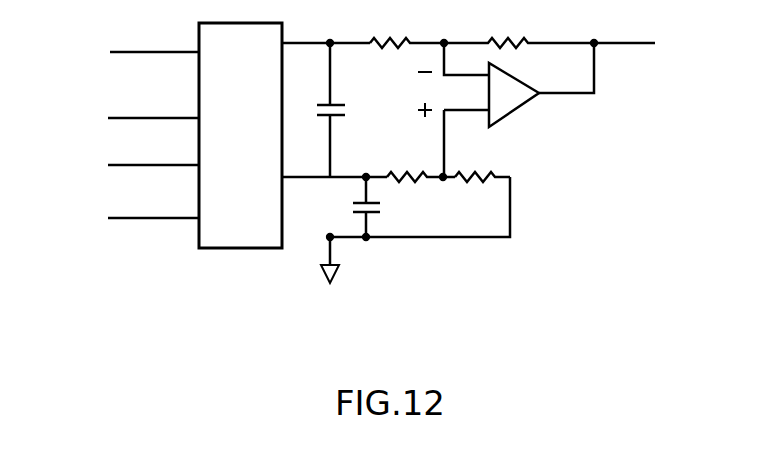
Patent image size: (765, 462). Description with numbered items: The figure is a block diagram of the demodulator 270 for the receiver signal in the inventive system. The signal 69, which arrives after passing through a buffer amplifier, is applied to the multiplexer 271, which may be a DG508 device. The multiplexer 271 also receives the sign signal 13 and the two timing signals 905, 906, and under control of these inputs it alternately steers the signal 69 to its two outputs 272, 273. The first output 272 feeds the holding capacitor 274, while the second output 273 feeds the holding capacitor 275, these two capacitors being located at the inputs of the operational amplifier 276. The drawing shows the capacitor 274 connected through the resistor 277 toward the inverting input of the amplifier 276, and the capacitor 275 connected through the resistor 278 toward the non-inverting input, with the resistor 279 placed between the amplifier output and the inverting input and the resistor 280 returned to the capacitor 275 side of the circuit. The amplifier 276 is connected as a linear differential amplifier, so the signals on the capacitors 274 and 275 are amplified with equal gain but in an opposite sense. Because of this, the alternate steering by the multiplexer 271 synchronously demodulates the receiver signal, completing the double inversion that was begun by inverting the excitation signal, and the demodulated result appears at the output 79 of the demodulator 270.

The signal 69 is at (126, 51).
The timing signal 905 is at (126, 111).
The timing signal 906 is at (126, 158).
The sign signal 13 is at (138, 211).
The multiplexer 271 is at (227, 163).
The multiplexer first output 272 is at (326, 29).
The multiplexer second output 273 is at (334, 166).
The holding capacitor 274 is at (352, 110).
The holding capacitor 275 is at (387, 209).
The operational amplifier 276 is at (506, 87).
The resistor 277 is at (409, 30).
The resistor 278 is at (416, 146).
The feedback resistor 279 is at (519, 30).
The resistor 280 is at (481, 167).
The demodulator output 79 is at (640, 45).
The demodulator 270 is at (460, 260).